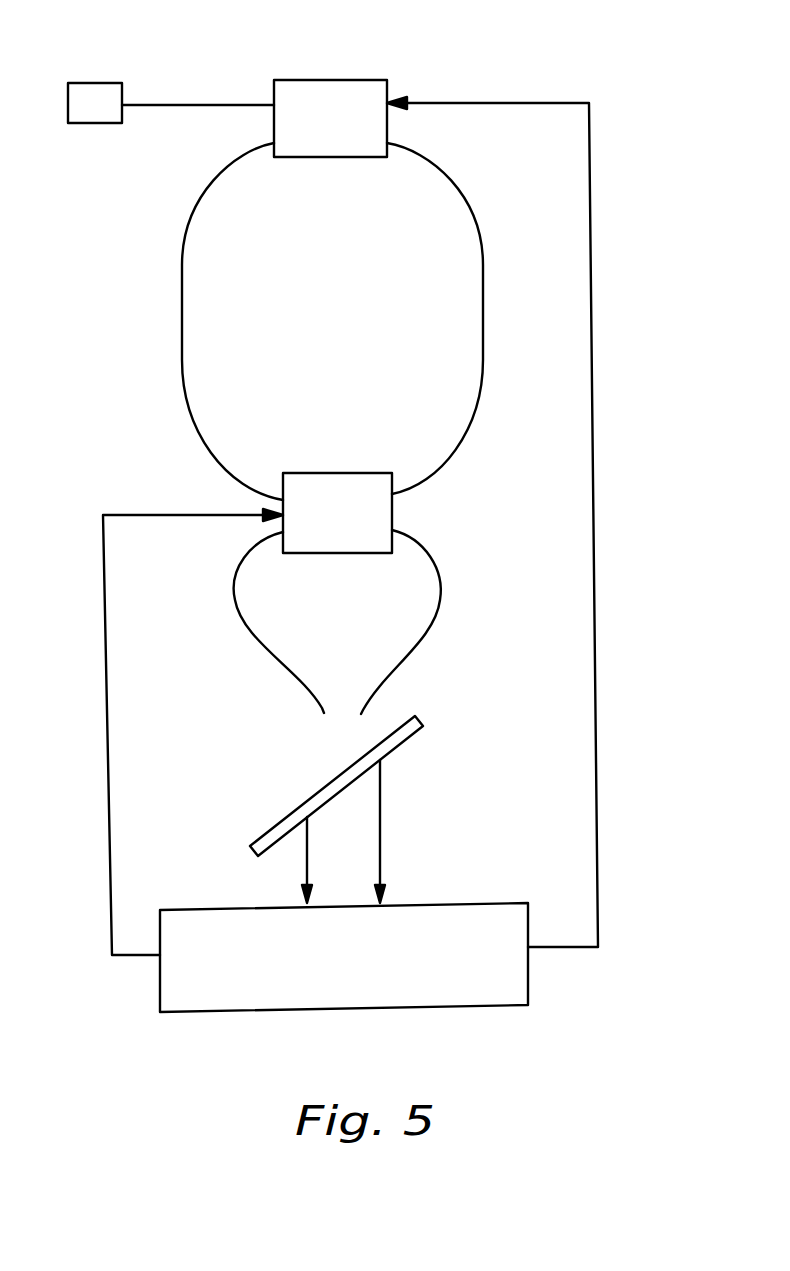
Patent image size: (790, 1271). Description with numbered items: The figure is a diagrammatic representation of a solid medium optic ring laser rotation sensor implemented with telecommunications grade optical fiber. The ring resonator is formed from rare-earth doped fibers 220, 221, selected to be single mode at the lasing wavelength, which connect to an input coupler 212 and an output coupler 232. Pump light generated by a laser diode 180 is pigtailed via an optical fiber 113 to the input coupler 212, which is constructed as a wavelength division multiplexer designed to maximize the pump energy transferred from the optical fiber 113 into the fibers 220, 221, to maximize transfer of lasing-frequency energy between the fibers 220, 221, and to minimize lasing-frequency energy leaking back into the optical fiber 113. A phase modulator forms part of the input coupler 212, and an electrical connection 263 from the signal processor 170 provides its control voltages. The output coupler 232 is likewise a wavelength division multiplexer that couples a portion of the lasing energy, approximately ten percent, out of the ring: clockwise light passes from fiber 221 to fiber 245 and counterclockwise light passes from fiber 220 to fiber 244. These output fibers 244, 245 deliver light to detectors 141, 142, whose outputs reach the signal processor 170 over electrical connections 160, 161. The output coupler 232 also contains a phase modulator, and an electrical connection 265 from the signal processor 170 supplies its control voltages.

The optical fiber 113 is at (203, 101).
The laser diode 180 is at (88, 124).
The input coupler 212 is at (337, 80).
The rare-earth doped fiber 220 is at (183, 316).
The rare-earth doped fiber 221 is at (482, 314).
The output coupler 232 is at (330, 475).
The fiber 244 is at (432, 630).
The fiber 245 is at (242, 625).
The detector 141 is at (250, 851).
The detector 142 is at (341, 789).
The electrical connection 160 is at (381, 820).
The electrical connection 161 is at (337, 843).
The signal processor 170 is at (240, 1013).
The electrical connection 263 is at (597, 523).
The electrical connection 265 is at (110, 758).